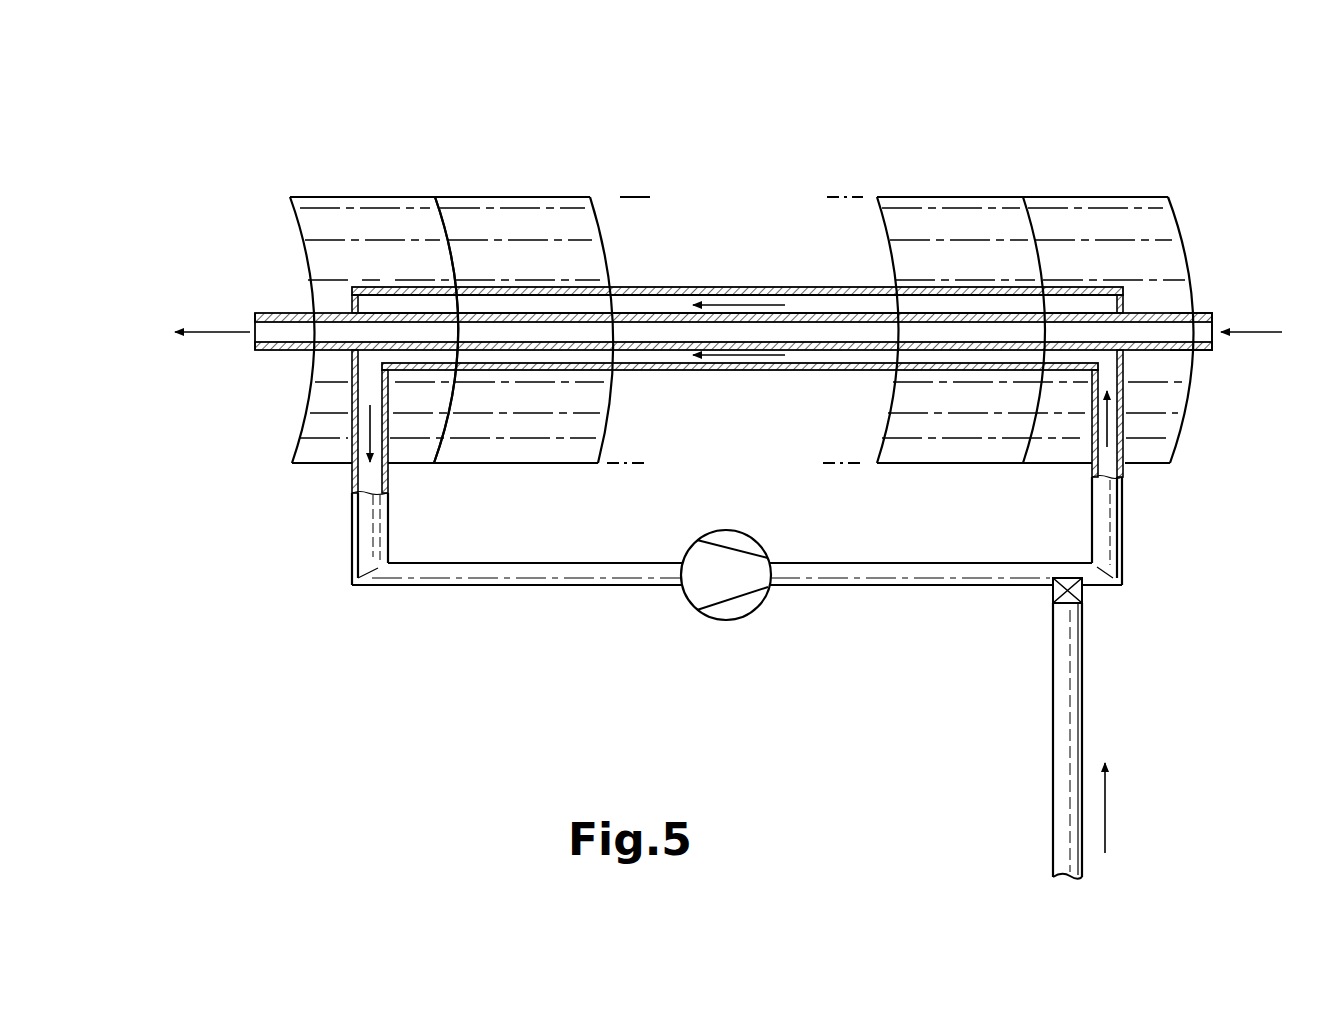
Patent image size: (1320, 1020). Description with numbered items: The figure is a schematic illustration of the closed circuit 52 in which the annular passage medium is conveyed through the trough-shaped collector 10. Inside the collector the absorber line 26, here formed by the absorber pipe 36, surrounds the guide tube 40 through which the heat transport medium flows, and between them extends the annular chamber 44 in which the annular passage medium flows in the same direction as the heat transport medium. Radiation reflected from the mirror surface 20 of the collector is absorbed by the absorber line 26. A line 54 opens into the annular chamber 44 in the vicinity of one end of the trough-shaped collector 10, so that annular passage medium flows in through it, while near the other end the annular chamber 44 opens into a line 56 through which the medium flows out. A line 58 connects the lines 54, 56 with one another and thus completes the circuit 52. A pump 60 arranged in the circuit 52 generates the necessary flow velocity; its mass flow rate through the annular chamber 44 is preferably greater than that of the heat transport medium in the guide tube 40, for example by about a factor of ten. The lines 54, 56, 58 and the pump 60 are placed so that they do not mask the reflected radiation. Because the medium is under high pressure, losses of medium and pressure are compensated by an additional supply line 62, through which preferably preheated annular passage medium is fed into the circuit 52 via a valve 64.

The trough-shaped collector 10 is at (377, 182).
The mirror surface 20 is at (500, 225).
The absorber line 26 is at (937, 283).
The absorber pipe 36 is at (753, 287).
The guide tube 40 is at (1180, 308).
The annular chamber 44 is at (652, 292).
The closed circuit 52 is at (960, 573).
The line 54 is at (1103, 515).
The line 56 is at (358, 527).
The line 58 is at (618, 575).
The pump 60 is at (762, 587).
The additional supply line 62 is at (1063, 678).
The valve 64 is at (1084, 590).